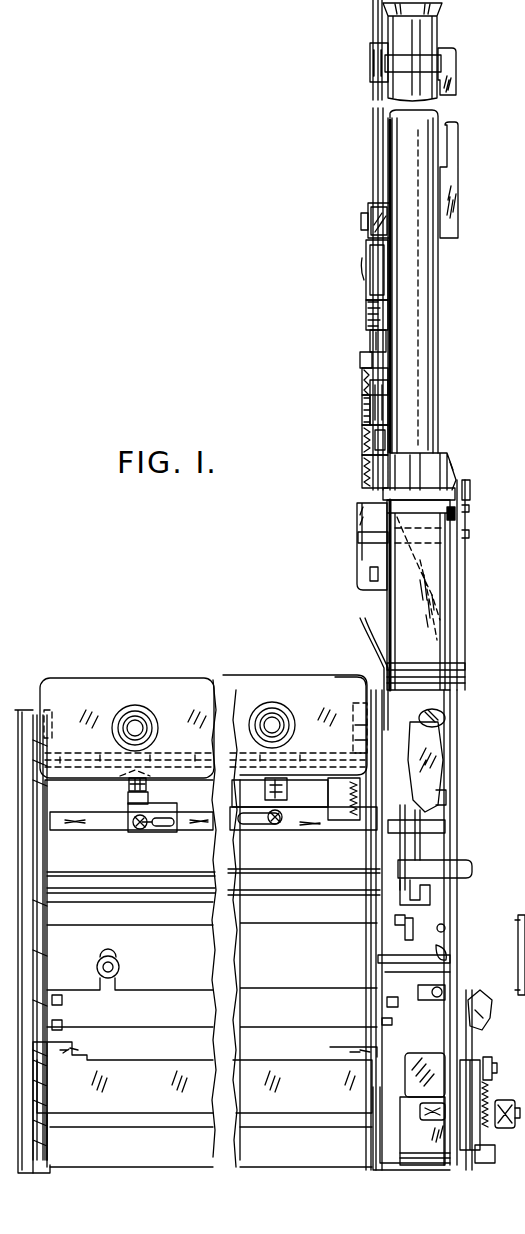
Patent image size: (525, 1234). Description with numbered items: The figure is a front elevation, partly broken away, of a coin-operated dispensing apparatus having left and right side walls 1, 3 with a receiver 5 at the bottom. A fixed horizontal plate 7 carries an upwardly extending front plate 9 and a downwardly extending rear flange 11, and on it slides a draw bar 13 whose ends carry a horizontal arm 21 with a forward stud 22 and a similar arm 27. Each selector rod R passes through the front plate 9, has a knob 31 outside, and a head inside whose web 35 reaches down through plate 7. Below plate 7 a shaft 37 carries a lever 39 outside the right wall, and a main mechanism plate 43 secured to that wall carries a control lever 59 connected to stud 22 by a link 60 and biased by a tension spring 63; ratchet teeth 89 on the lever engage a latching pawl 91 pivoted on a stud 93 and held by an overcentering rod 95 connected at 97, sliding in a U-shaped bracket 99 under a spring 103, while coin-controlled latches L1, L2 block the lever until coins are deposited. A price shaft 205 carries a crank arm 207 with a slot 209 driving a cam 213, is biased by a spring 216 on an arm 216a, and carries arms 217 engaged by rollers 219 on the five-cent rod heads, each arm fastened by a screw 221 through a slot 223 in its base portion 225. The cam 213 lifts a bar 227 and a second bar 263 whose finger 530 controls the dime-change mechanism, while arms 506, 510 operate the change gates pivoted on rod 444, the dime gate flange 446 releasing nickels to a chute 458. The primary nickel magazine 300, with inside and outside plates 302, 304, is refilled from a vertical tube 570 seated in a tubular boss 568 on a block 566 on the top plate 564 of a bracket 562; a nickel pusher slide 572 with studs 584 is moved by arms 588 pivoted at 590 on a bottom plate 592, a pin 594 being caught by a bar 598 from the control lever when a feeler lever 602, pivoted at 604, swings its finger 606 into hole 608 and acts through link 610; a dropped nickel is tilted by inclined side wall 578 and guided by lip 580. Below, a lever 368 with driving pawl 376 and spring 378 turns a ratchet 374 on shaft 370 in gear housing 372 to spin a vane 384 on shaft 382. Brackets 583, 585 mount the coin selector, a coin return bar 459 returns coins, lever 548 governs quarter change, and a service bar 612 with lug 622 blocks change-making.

The left side wall 1 is at (42, 985).
The right side wall 3 is at (368, 951).
The receiver 5 is at (166, 1058).
The fixed horizontal plate 7 is at (110, 765).
The front plate 9 is at (55, 684).
The rear flange 11 is at (58, 800).
The draw bar 13 is at (100, 760).
The horizontal arm 21 is at (350, 710).
The forward stud 22 is at (352, 738).
The arm 27 is at (48, 712).
The knob 31 is at (128, 713).
The web 35 is at (118, 778).
The shaft 37 is at (165, 886).
The lever 39 is at (380, 929).
The main mechanism plate 43 is at (372, 24).
The control lever 59 is at (368, 473).
The link 60 is at (370, 680).
The tension spring 63 is at (362, 438).
The ratchet teeth 89 is at (365, 448).
The latching pawl 91 is at (362, 416).
The stud 93 is at (362, 399).
The rod 95 is at (368, 341).
The pivotal connection 97 is at (362, 386).
The U-shaped bracket 99 is at (360, 373).
The spring 103 is at (368, 307).
The coin-controlled latch L1 is at (360, 433).
The coin-controlled latch L2 is at (362, 461).
The selector rod R is at (140, 722).
The price shaft 205 is at (67, 826).
The crank arm 207 is at (380, 843).
The slot 209 is at (520, 948).
The cam 213 is at (421, 849).
The spring 216 is at (362, 781).
The arm 216a is at (333, 840).
The arm 217 is at (127, 808).
The roller 219 is at (146, 798).
The screw 221 is at (137, 829).
The slot 223 is at (158, 826).
The base portion 225 is at (172, 826).
The bar 227 is at (416, 836).
The second bar 263 is at (431, 895).
The primary nickel magazine 300 is at (469, 844).
The inside plate 302 is at (450, 934).
The outside plate 304 is at (448, 940).
The lever 368 is at (481, 1040).
The shaft 370 is at (499, 1062).
The gear housing 372 is at (473, 1052).
The ratchet 374 is at (477, 1161).
The driving pawl 376 is at (489, 1088).
The spring 378 is at (480, 1138).
The shaft 382 is at (418, 1107).
The vane 384 is at (410, 1149).
The rod 444 is at (448, 976).
The lower flange 446 is at (440, 1061).
The chute 458 is at (374, 1168).
The coin return bar 459 is at (376, 158).
The arm 506 is at (395, 1001).
The arm 510 is at (412, 958).
The finger 530 is at (408, 919).
The lever 548 is at (372, 252).
The bracket 562 is at (446, 581).
The top plate 564 is at (453, 517).
The block 566 is at (453, 480).
The tubular boss 568 is at (449, 456).
The vertical tube 570 is at (423, 27).
The nickel pusher slide 572 is at (415, 493).
The inclined side wall 578 is at (362, 571).
The lip 580 is at (450, 616).
The bracket 583 is at (454, 65).
The stud 584 is at (372, 493).
The bracket 585 is at (455, 152).
The arm 588 is at (368, 586).
The pivot 590 is at (462, 667).
The bottom plate 592 is at (466, 681).
The pin 594 is at (362, 539).
The bar 598 is at (358, 514).
The feeler lever 602 is at (440, 771).
The pivot 604 is at (447, 720).
The finger 606 is at (448, 796).
The hole 608 is at (458, 805).
The link 610 is at (365, 623).
The bar 612 is at (375, 208).
The lug 622 is at (364, 222).